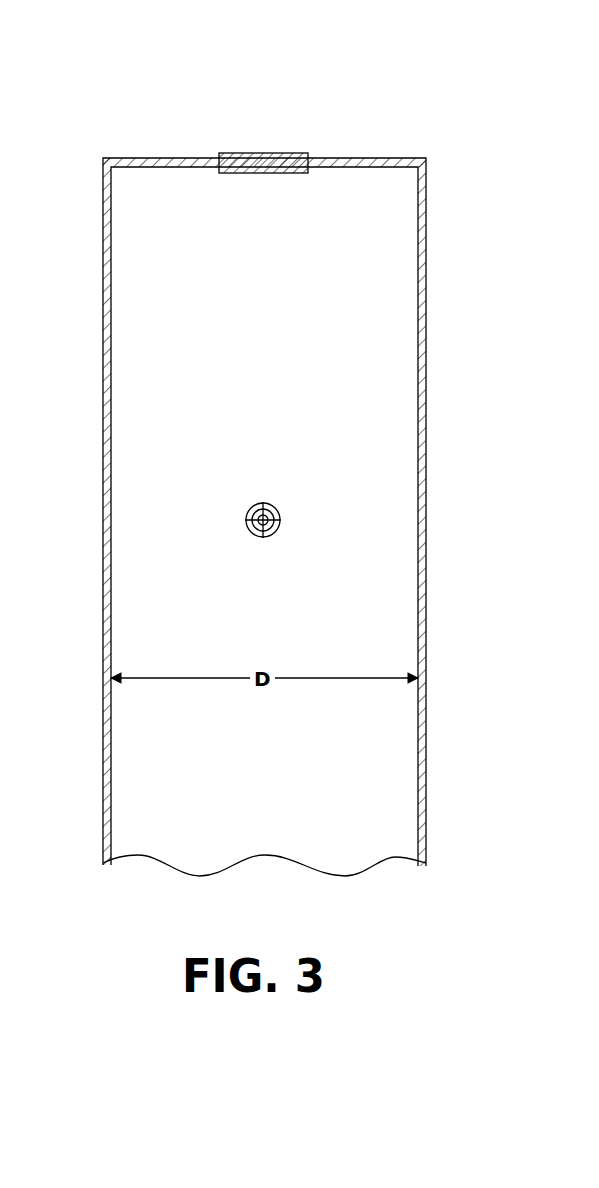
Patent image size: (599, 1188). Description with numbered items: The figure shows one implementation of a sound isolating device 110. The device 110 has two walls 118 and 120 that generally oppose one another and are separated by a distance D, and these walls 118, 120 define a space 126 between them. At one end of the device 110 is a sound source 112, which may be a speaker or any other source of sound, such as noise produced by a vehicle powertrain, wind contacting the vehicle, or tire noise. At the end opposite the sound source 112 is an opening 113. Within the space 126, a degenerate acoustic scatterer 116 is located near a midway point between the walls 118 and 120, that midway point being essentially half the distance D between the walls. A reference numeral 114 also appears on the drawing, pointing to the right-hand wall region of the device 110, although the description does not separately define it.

The sound isolating device 110 is at (118, 140).
The sound source 112 is at (272, 153).
The opening 113 is at (300, 837).
The side wall 114 is at (427, 223).
The degenerate acoustic scatterer 116 is at (274, 506).
The wall 118 is at (426, 553).
The wall 120 is at (103, 447).
The space 126 is at (302, 345).